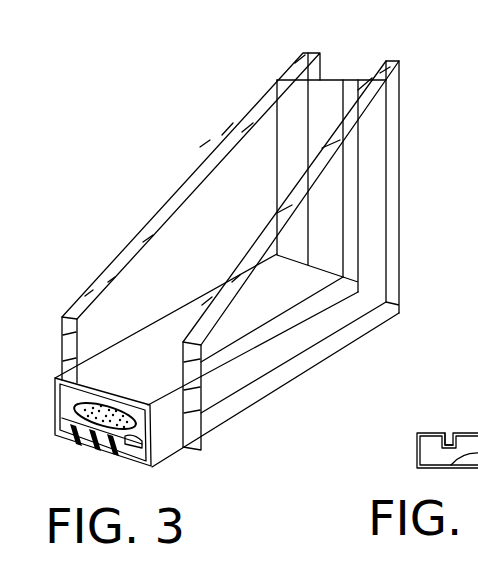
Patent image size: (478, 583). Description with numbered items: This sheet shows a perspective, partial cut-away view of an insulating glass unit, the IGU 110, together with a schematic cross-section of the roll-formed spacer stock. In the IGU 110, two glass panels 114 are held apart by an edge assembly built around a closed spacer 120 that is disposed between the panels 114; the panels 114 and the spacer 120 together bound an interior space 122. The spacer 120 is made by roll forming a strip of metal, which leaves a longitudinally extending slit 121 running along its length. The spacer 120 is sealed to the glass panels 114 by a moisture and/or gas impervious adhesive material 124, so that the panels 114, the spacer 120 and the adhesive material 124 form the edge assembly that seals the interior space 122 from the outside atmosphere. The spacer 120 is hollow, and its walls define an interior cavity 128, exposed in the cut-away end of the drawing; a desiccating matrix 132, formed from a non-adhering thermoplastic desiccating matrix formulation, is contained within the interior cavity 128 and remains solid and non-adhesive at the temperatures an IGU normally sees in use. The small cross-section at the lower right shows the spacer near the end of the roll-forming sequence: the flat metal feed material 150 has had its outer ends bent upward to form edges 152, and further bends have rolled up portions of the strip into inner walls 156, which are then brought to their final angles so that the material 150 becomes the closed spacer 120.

In FIG. 3, the IGU 110 is at (413, 186).
In FIG. 3, the glass panels 114 is at (392, 94).
In FIG. 3, the closed spacer 120 is at (337, 170).
In FIG. 3, the longitudinally extending slit 121 is at (307, 104).
In FIG. 3, the interior space 122 is at (236, 208).
In FIG. 3, the adhesive material 124 is at (357, 305).
In FIG. 3, the interior cavity 128 is at (118, 448).
In FIG. 3, the desiccating matrix 132 is at (98, 414).
In FIG. 5D, the metal feed material 150 is at (432, 473).
In FIG. 5D, the edges 152 is at (462, 442).
In FIG. 5D, the inner walls 156 is at (433, 432).